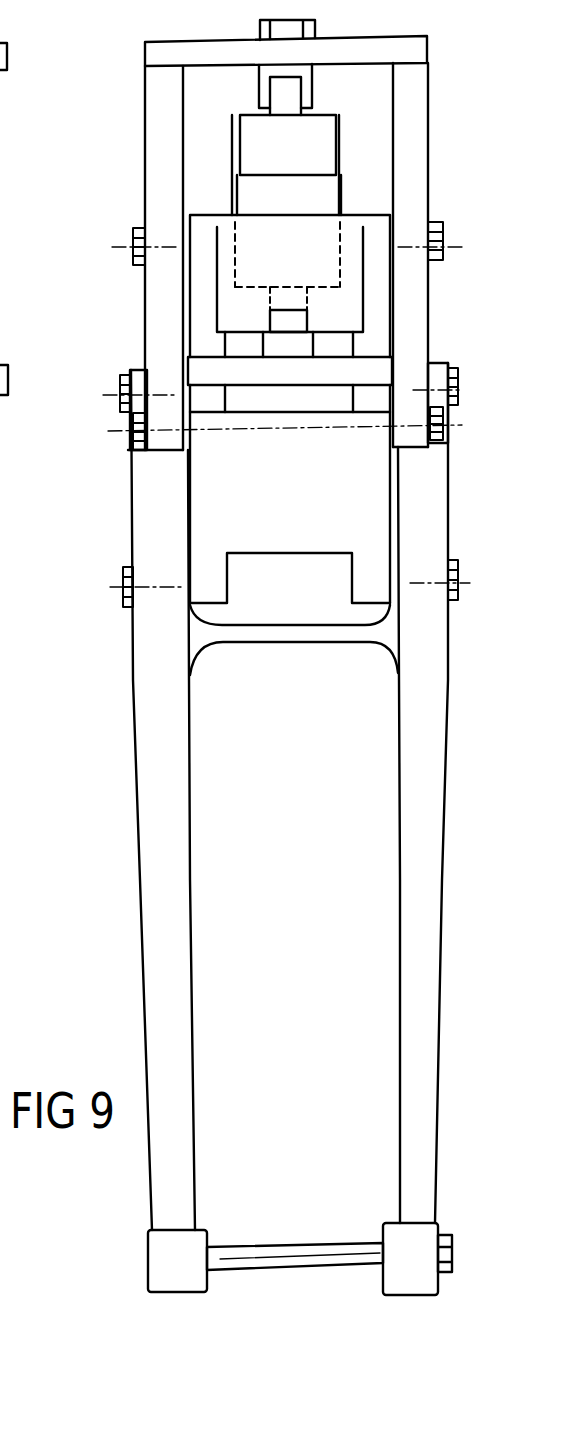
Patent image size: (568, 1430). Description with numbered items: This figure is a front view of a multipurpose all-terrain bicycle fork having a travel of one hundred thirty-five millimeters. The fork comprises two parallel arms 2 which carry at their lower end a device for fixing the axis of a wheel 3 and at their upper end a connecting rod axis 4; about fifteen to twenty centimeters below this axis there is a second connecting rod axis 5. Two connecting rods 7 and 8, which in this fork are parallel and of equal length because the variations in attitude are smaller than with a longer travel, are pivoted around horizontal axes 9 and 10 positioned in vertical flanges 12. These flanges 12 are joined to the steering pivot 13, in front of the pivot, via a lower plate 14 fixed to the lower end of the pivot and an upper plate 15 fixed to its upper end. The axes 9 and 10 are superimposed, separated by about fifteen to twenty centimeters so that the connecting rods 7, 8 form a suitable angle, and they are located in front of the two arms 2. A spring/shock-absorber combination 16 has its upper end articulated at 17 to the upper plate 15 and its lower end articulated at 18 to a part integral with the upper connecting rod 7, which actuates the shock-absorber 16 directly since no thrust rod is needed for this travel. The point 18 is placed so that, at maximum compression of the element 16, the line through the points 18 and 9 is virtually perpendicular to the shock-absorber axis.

The arms 2 is at (425, 805).
The axis of a wheel 3 is at (352, 1258).
The connecting rod axis 4 is at (458, 386).
The second connecting rod axis 5 is at (458, 583).
The upper connecting rod 7 is at (377, 312).
The lower connecting rod 8 is at (350, 488).
The horizontal axis 9 is at (443, 250).
The horizontal axis 10 is at (443, 425).
The vertical flanges 12 is at (410, 186).
The steering pivot 13 is at (12, 313).
The lower plate 14 is at (368, 370).
The upper plate 15 is at (363, 47).
The spring/shock-absorber combination 16 is at (317, 160).
The upper articulation point 17 is at (243, 92).
The lower articulation point 18 is at (287, 322).